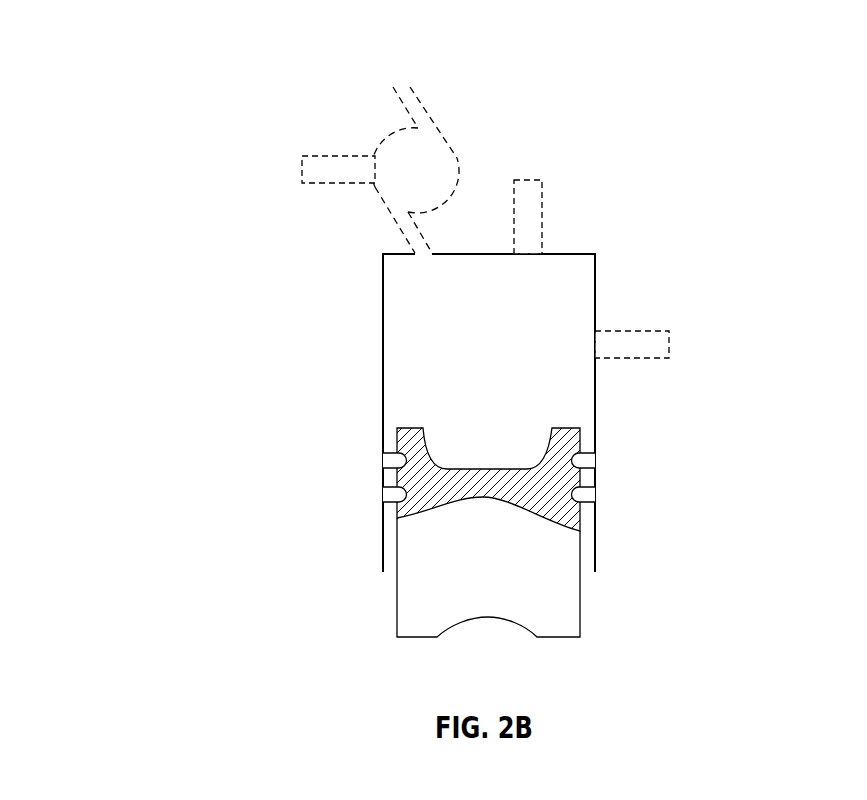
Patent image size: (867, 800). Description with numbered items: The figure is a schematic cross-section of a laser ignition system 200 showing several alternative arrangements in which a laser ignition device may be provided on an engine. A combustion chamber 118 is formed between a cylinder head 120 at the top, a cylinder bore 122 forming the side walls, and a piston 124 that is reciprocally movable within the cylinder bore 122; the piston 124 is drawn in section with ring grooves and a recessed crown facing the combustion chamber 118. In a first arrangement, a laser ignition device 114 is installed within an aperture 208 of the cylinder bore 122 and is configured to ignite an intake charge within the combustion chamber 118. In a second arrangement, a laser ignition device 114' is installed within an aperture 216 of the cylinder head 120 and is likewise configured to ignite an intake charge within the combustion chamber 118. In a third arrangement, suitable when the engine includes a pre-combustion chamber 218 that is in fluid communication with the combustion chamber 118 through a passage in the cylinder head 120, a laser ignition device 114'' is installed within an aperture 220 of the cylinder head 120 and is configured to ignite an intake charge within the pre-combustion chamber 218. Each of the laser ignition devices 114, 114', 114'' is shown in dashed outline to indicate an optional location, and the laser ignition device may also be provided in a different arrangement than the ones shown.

The laser ignition system 200 is at (136, 86).
The laser ignition device 114 is at (526, 185).
The laser ignition device 114' is at (675, 344).
The laser ignition device 114'' is at (295, 169).
The combustion chamber 118 is at (508, 364).
The cylinder head 120 is at (585, 254).
The cylinder bore 122 is at (595, 420).
The piston 124 is at (508, 569).
The aperture 208 is at (580, 342).
The aperture 216 is at (529, 267).
The pre-combustion chamber 218 is at (435, 181).
The aperture 220 is at (361, 196).